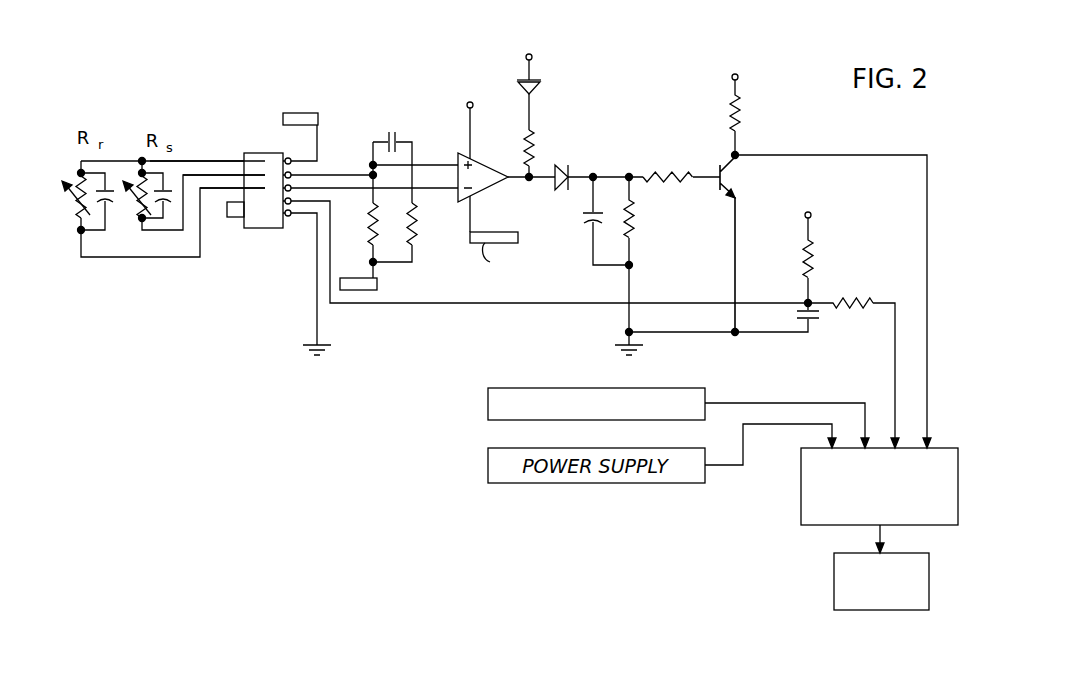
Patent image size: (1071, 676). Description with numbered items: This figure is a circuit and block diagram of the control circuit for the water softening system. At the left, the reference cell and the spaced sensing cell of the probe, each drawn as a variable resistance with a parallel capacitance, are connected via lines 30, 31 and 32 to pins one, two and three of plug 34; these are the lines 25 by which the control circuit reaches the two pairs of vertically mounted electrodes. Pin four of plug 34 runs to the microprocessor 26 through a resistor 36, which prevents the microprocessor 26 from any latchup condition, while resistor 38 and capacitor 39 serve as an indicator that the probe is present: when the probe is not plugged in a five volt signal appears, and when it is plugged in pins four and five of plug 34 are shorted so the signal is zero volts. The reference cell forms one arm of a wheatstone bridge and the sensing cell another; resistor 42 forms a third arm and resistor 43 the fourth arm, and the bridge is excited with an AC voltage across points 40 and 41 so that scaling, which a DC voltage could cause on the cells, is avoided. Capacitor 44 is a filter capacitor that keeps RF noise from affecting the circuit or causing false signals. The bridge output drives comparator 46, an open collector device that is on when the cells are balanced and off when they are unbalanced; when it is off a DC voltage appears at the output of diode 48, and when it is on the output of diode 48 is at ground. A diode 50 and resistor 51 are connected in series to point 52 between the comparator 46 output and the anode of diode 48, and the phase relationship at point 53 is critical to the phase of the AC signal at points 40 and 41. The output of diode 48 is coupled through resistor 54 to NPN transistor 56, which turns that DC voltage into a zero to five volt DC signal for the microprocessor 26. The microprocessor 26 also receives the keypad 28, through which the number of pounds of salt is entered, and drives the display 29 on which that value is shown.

The lines 25 is at (337, 175).
The microprocessor control circuit 26 is at (801, 515).
The keypad 28 is at (613, 388).
The display 29 is at (834, 580).
The line 30 is at (192, 161).
The line 31 is at (208, 175).
The line 32 is at (223, 188).
The plug 34 is at (270, 222).
The resistor 36 is at (872, 302).
The resistor 38 is at (814, 258).
The capacitor 39 is at (813, 320).
The point 40 is at (297, 113).
The point 41 is at (377, 284).
The resistor 42 is at (412, 228).
The resistor 43 is at (373, 232).
The capacitor 44 is at (394, 132).
The comparator 46 is at (487, 165).
The diode 48 is at (565, 166).
The diode 50 is at (541, 85).
The resistor 51 is at (536, 142).
The point 52 is at (529, 179).
The point 53 is at (534, 57).
The resistor 54 is at (655, 175).
The NPN transistor 56 is at (720, 185).